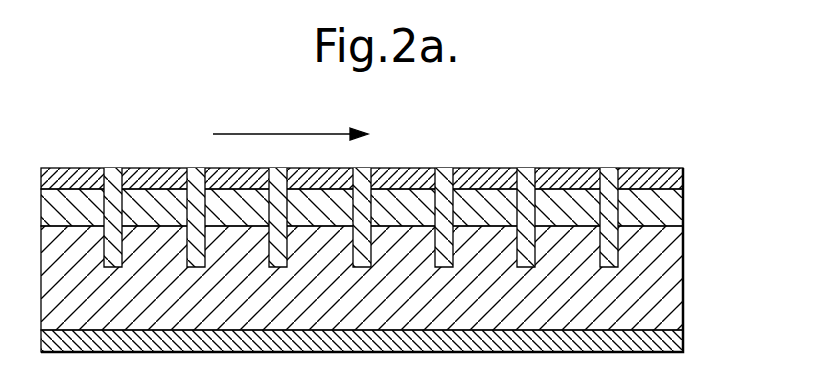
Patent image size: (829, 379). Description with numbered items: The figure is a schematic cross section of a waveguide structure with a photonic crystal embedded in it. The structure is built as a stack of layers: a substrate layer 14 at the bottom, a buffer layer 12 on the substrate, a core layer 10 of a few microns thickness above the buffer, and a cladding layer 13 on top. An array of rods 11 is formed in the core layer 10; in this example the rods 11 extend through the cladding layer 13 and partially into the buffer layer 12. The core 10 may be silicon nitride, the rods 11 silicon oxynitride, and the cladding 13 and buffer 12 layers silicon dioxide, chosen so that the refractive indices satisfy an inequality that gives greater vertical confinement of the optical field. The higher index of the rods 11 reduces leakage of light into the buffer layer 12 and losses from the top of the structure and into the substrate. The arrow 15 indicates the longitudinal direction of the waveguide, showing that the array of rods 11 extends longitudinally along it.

The cladding layer 13 is at (683, 178).
The core layer 10 is at (665, 213).
The buffer layer 12 is at (665, 278).
The substrate layer 14 is at (667, 338).
The rods 11 is at (528, 170).
The arrow 15 is at (263, 131).